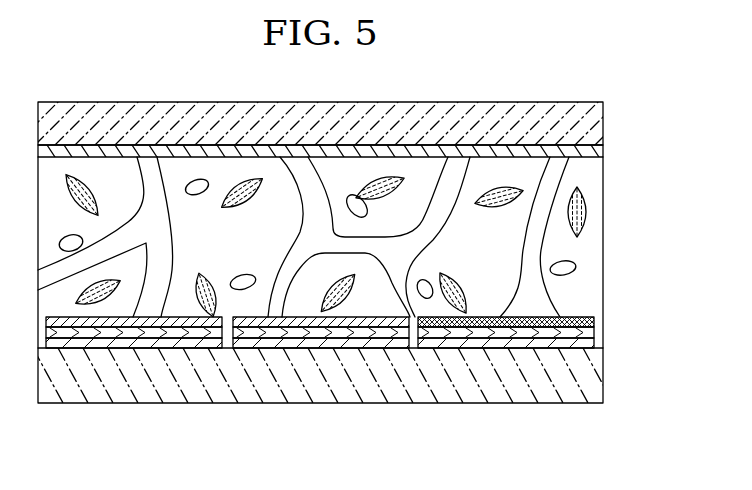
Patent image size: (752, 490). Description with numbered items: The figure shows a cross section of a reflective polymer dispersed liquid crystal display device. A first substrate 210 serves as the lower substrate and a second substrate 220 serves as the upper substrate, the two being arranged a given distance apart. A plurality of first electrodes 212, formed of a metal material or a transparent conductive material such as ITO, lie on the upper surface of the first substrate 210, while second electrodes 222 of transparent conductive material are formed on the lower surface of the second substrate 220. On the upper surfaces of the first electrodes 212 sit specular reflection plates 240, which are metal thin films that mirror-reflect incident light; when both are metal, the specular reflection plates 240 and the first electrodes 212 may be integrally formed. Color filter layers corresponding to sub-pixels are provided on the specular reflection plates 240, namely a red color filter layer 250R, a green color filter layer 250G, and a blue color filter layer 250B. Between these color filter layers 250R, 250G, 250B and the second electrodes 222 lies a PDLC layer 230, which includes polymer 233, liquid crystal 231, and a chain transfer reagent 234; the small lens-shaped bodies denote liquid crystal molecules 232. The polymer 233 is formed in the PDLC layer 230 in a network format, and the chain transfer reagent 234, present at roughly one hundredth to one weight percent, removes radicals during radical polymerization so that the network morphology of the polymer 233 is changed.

The first substrate 210 is at (603, 377).
The first electrodes 212 is at (191, 343).
The second substrate 220 is at (603, 123).
The second electrodes 222 is at (603, 150).
The PDLC layer 230 is at (390, 252).
The liquid crystal 231 is at (598, 183).
The liquid crystal molecules 232 is at (586, 215).
The polymer 233 is at (535, 253).
The chain transfer reagent 234 is at (688, 177).
The specular reflection plates 240 is at (138, 332).
The red color filter layer 250R is at (85, 322).
The green color filter layer 250G is at (270, 322).
The blue color filter layer 250B is at (458, 322).